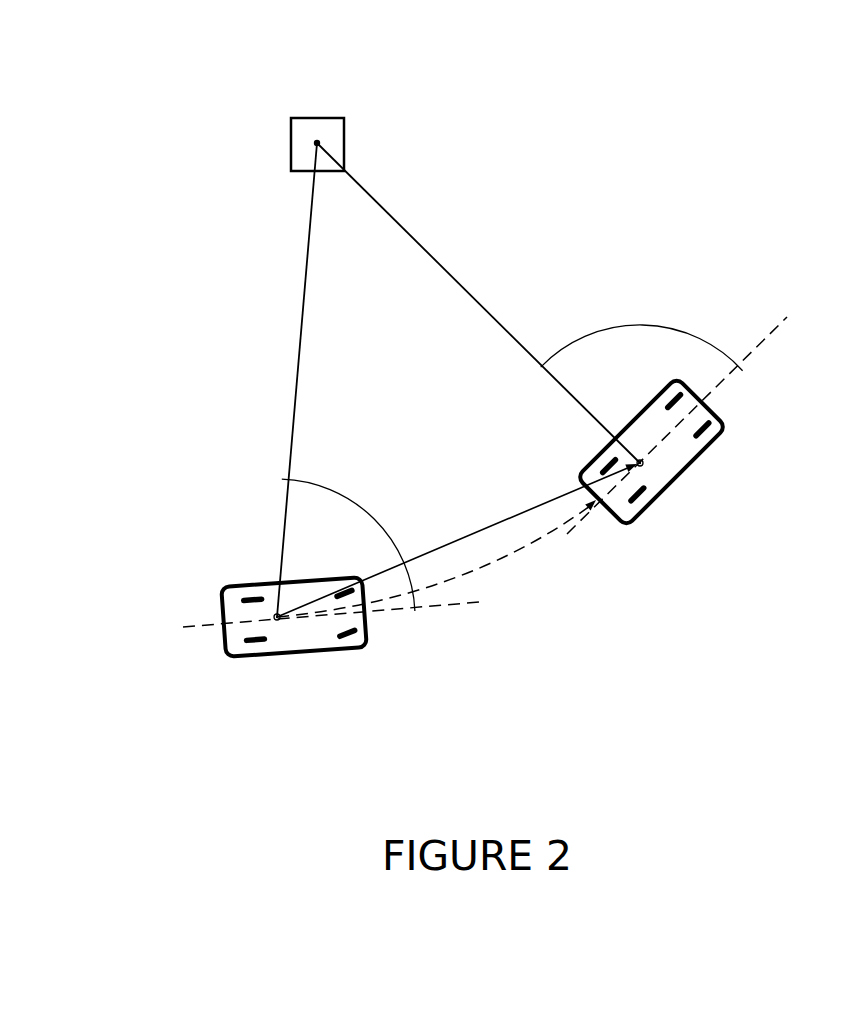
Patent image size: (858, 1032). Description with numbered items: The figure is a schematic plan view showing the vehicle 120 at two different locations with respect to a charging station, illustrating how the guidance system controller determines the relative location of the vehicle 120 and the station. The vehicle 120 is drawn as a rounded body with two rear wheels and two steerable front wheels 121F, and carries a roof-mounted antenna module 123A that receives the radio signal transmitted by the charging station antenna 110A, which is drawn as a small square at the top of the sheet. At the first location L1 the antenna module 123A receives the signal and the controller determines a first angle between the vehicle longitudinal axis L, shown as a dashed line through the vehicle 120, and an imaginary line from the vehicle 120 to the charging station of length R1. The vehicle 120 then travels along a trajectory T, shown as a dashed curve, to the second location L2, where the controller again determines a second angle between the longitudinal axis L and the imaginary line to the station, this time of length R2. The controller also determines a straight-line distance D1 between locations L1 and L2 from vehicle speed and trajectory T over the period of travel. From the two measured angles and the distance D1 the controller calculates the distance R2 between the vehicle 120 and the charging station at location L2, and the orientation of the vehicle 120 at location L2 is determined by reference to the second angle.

The charging station antenna 110A is at (322, 141).
The vehicle 120 is at (352, 649).
The steerable front wheels 121F is at (353, 592).
The antenna module 123A is at (277, 621).
The length of imaginary line at location L1 R1 is at (295, 387).
The distance between vehicle and charging station at location L2 R2 is at (478, 302).
The straight-line distance D1 is at (458, 539).
The trajectory T is at (530, 543).
The longitudinal axis L is at (462, 604).
The first location L1 is at (202, 556).
The second location L2 is at (712, 474).